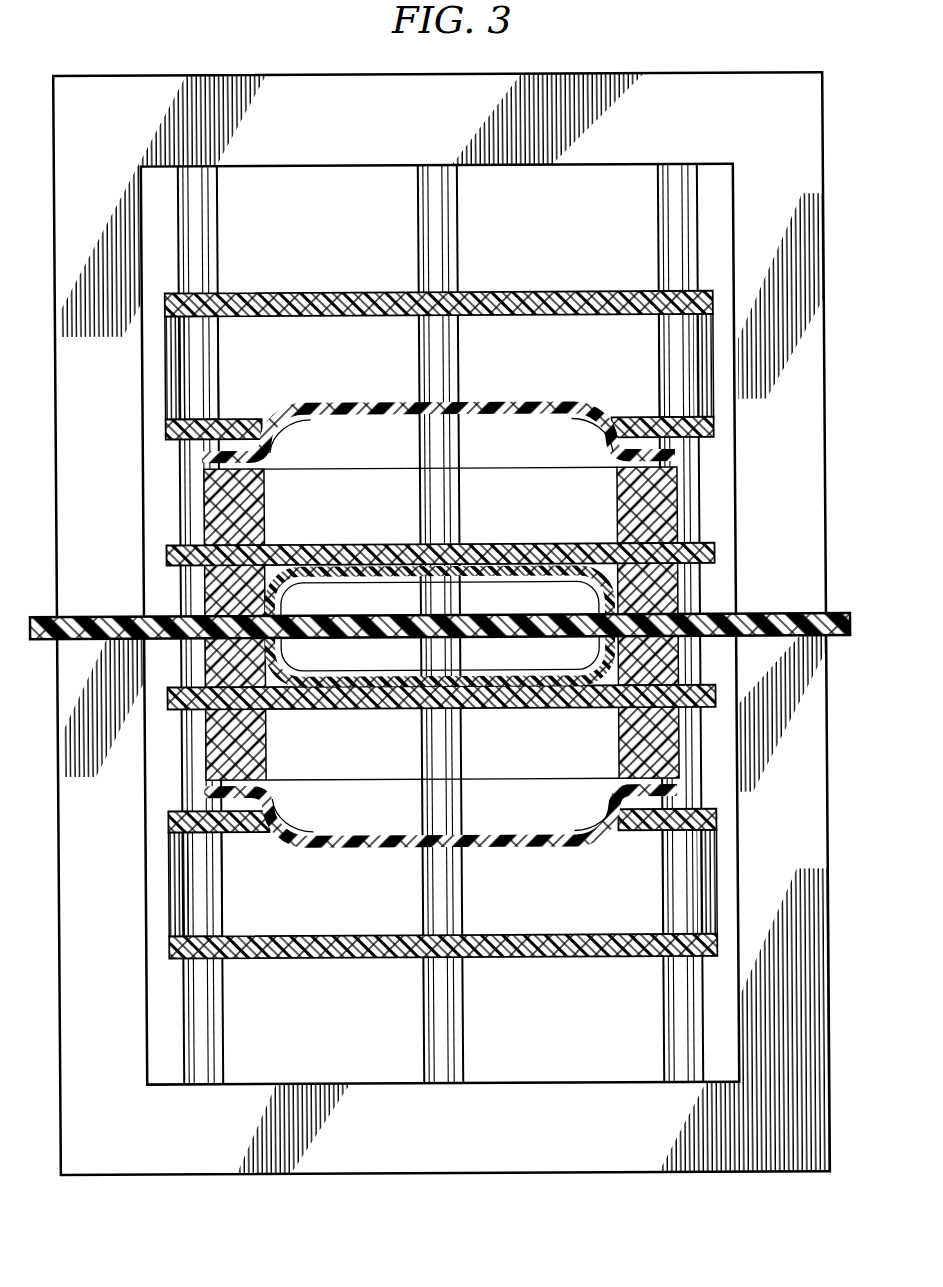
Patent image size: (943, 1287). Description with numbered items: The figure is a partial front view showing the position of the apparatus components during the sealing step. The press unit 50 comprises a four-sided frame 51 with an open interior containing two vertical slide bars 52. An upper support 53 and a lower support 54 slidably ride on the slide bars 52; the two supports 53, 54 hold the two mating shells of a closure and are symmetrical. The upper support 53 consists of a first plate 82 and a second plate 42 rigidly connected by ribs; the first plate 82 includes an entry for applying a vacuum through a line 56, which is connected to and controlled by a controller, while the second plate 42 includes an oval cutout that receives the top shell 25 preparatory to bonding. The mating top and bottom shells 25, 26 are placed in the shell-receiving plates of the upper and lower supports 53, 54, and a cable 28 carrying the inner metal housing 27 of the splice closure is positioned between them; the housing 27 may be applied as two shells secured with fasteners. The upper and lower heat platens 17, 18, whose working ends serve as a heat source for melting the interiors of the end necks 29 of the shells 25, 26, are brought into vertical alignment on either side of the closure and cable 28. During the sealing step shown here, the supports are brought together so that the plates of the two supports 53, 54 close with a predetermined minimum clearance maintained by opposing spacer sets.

The press unit 50 is at (462, 1222).
The frame 51 is at (814, 215).
The slide bars 52 is at (219, 231).
The upper support 53 is at (700, 354).
The lower support 54 is at (702, 888).
The line 56 is at (460, 232).
The first plate 82 is at (557, 291).
The second plate 42 is at (245, 418).
The top shell 25 is at (521, 402).
The bottom shell 26 is at (541, 848).
The inner metal housing 27 is at (603, 564).
The cable 28 is at (769, 614).
The end necks 29 is at (682, 456).
The upper heat platen 17 is at (616, 490).
The lower heat platen 18 is at (616, 745).